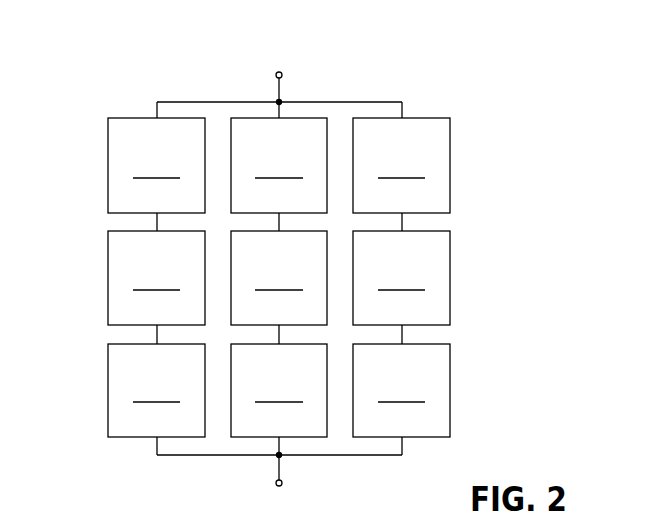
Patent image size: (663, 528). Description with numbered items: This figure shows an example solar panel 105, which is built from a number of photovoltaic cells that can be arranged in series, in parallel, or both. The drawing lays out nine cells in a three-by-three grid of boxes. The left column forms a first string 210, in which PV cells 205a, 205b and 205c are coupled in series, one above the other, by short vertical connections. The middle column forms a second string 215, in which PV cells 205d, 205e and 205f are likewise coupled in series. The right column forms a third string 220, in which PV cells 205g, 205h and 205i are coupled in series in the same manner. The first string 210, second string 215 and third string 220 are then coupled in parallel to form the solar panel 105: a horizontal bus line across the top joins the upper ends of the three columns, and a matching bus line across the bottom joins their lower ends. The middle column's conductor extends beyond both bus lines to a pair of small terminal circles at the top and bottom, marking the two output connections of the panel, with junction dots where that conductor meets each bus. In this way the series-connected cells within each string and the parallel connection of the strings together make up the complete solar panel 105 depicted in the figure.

The solar panel 105 is at (492, 81).
The first string 210 is at (136, 111).
The second string 215 is at (258, 111).
The third string 220 is at (425, 111).
The PV cell 205a is at (156, 165).
The PV cell 205b is at (156, 278).
The PV cell 205c is at (156, 390).
The PV cell 205d is at (279, 165).
The PV cell 205e is at (279, 278).
The PV cell 205f is at (279, 390).
The PV cell 205g is at (401, 165).
The PV cell 205h is at (401, 278).
The PV cell 205i is at (401, 390).